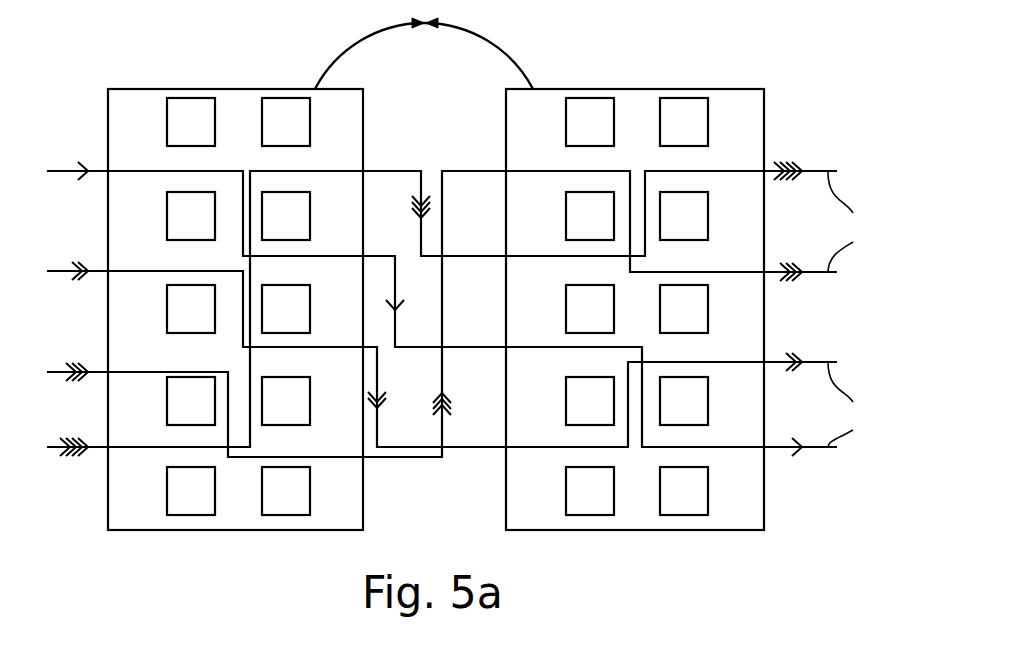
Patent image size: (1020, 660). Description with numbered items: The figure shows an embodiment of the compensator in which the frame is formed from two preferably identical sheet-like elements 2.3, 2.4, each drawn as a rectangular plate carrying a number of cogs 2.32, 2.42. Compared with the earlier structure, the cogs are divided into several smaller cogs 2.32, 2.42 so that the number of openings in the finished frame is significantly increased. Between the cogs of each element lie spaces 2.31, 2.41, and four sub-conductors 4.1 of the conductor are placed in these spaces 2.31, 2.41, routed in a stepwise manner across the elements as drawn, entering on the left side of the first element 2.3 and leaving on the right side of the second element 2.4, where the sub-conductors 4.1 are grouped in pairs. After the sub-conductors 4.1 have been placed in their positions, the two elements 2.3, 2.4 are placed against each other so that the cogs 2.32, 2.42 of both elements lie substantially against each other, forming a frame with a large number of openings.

The sheet-like element 2.3 is at (120, 88).
The space between the cogs 2.31 is at (240, 503).
The cog 2.32 is at (280, 98).
The sheet-like element 2.4 is at (737, 88).
The space between the cogs 2.41 is at (638, 502).
The cog 2.42 is at (680, 98).
The sub-conductor 4.1 is at (863, 310).